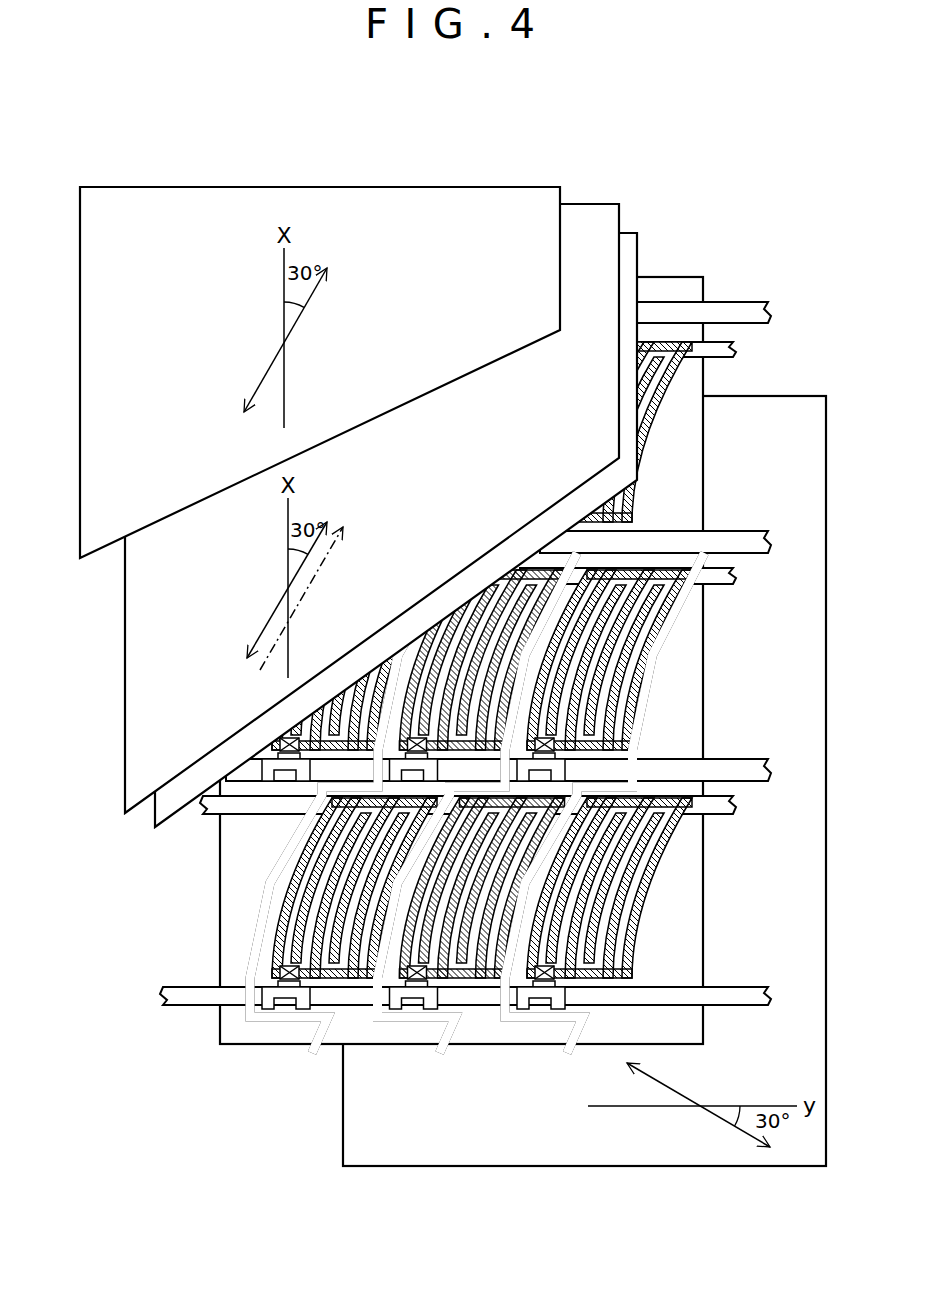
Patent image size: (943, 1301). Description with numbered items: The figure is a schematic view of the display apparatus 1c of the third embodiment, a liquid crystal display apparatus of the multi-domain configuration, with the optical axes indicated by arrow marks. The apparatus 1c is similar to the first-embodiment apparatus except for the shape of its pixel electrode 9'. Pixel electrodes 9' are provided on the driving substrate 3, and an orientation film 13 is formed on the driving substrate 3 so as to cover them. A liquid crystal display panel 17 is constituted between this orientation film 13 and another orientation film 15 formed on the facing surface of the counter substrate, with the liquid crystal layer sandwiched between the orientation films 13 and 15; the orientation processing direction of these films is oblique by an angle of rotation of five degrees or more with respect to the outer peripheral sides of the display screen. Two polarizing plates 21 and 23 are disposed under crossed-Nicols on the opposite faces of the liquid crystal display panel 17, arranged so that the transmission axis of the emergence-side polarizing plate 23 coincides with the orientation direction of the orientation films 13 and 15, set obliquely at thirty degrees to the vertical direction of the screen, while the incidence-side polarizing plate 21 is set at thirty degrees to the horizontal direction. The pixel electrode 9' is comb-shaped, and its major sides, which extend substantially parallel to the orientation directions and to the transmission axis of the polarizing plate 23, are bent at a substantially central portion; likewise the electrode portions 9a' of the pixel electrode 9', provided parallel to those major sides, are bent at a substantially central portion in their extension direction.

The display apparatus 1c is at (123, 131).
The driving substrate 3 is at (668, 276).
The pixel electrode 9' is at (520, 660).
The electrode portions 9a' is at (525, 660).
The orientation film 13 is at (622, 232).
The orientation film 15 is at (589, 203).
The liquid crystal display panel 17 is at (688, 209).
The polarizing plate 21 is at (343, 1103).
The polarizing plate 23 is at (190, 187).